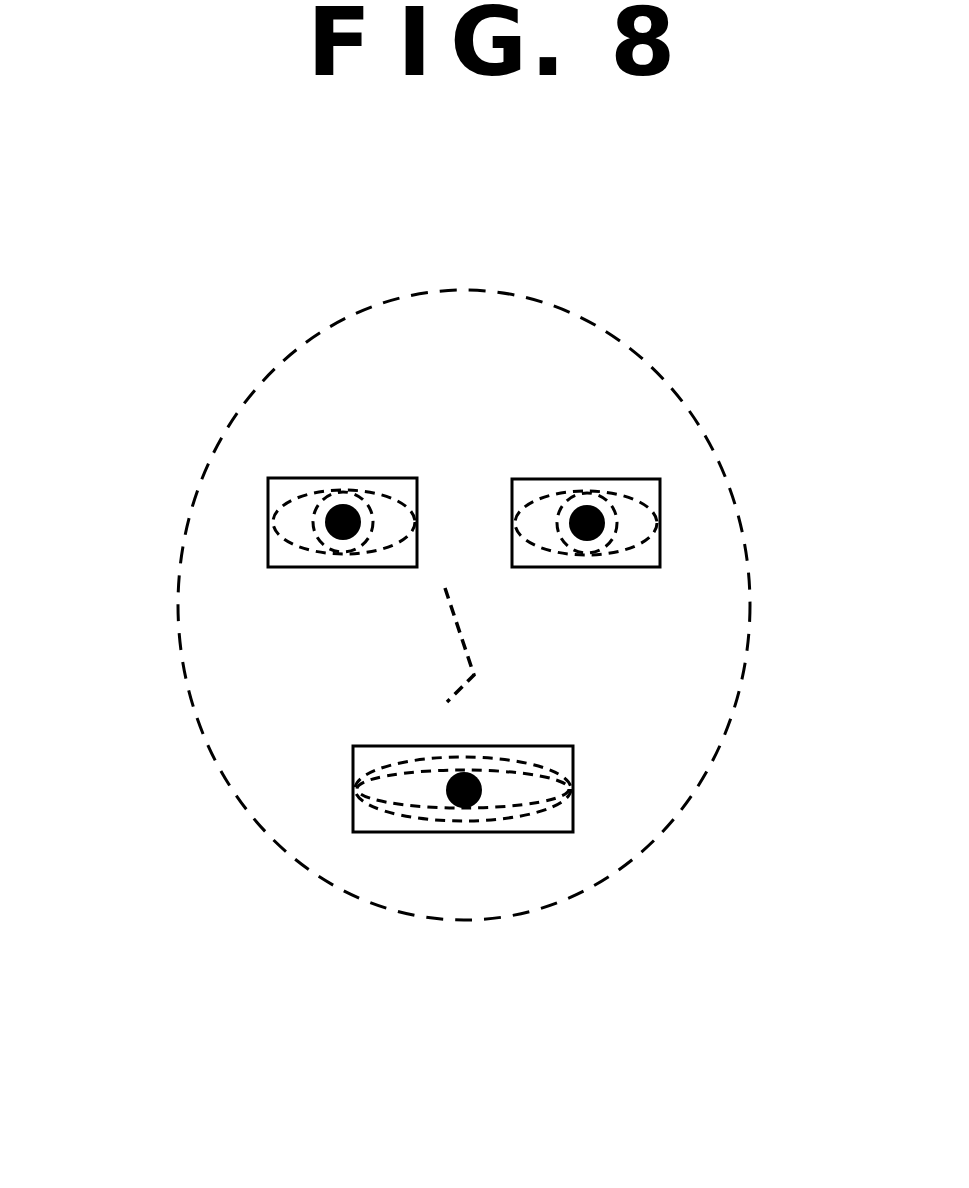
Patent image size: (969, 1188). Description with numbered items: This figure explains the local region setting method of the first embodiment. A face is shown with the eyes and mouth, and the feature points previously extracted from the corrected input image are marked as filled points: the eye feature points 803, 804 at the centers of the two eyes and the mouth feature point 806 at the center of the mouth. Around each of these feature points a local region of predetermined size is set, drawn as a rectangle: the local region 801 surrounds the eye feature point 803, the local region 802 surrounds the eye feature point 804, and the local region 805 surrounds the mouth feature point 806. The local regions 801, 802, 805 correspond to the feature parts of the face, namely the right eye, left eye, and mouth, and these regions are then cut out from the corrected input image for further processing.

The local region 801 is at (322, 436).
The local region 802 is at (607, 440).
The eye feature point 803 is at (335, 521).
The eye feature point 804 is at (600, 524).
The local region 805 is at (605, 802).
The mouth feature point 806 is at (465, 805).